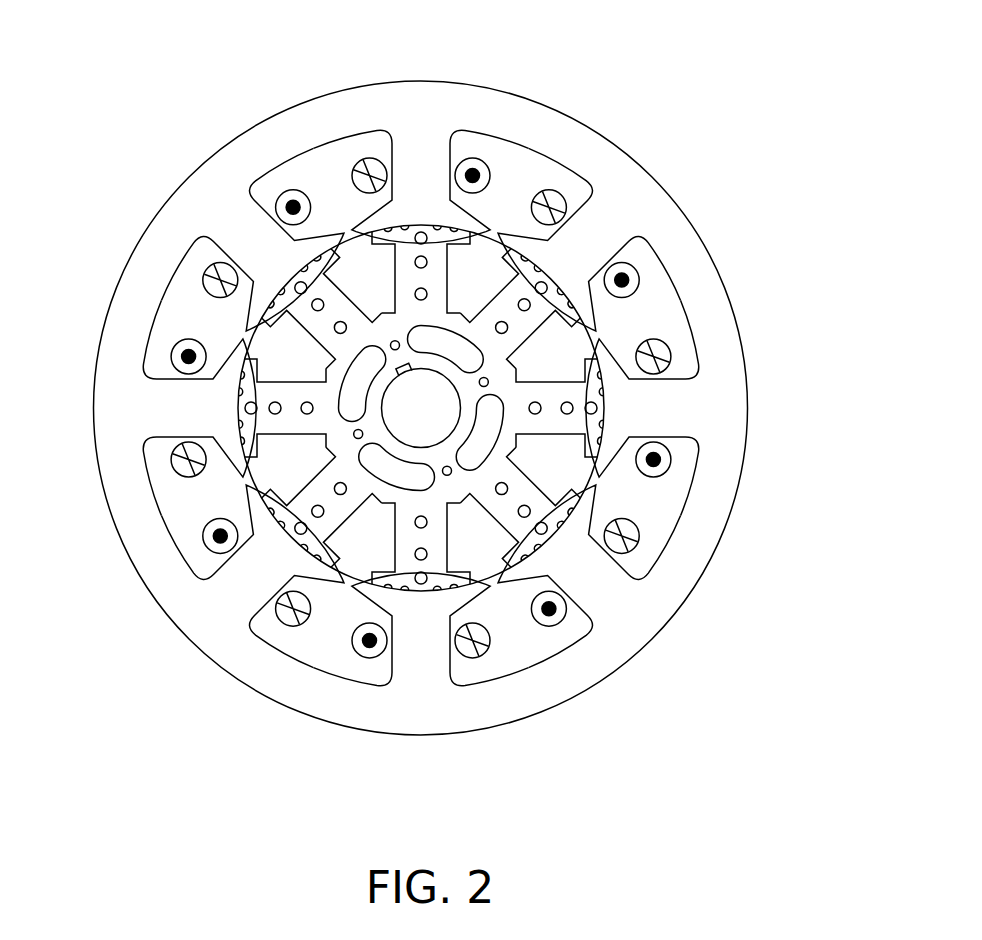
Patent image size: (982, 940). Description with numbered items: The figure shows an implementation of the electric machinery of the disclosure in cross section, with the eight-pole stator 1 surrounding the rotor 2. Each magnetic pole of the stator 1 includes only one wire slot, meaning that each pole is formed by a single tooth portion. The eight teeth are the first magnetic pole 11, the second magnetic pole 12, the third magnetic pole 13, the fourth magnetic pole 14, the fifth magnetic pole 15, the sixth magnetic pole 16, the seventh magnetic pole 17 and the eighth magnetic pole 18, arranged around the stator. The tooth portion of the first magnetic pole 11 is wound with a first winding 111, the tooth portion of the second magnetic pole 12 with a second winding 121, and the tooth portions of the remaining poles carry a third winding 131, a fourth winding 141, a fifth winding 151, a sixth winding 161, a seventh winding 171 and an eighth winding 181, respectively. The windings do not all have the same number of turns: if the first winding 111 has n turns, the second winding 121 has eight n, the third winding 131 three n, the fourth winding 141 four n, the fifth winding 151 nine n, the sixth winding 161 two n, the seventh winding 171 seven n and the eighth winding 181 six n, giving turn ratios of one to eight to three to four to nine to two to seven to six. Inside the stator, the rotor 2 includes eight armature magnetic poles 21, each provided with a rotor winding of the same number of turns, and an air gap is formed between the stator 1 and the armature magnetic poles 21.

The 8-pole stator 1 is at (630, 82).
The first magnetic pole 11 is at (418, 172).
The second magnetic pole 12 is at (587, 243).
The third magnetic pole 13 is at (660, 403).
The fourth magnetic pole 14 is at (592, 575).
The fifth magnetic pole 15 is at (422, 657).
The sixth magnetic pole 16 is at (250, 580).
The seventh magnetic pole 17 is at (188, 406).
The eighth magnetic pole 18 is at (244, 232).
The first winding 111 is at (473, 176).
The second winding 121 is at (622, 280).
The third winding 131 is at (653, 460).
The fourth winding 141 is at (549, 609).
The fifth winding 151 is at (368, 641).
The sixth winding 161 is at (220, 536).
The seventh winding 171 is at (188, 356).
The eighth winding 181 is at (292, 208).
The rotor 2 is at (386, 326).
The armature magnetic pole 21 is at (400, 272).